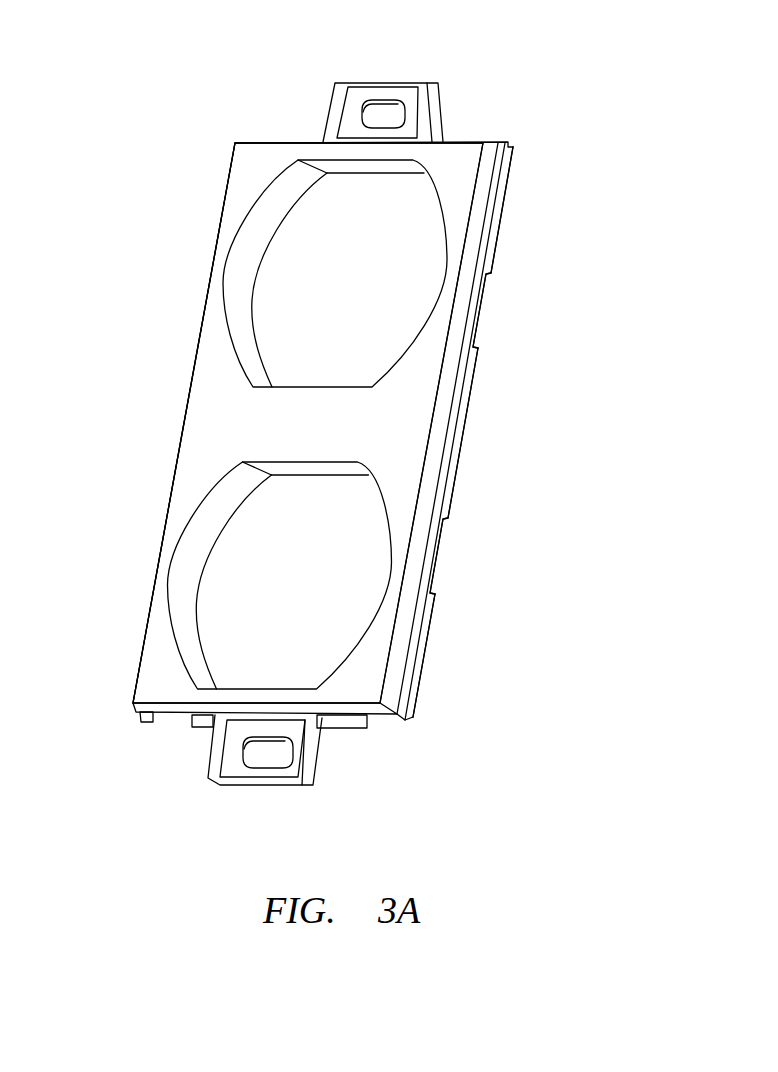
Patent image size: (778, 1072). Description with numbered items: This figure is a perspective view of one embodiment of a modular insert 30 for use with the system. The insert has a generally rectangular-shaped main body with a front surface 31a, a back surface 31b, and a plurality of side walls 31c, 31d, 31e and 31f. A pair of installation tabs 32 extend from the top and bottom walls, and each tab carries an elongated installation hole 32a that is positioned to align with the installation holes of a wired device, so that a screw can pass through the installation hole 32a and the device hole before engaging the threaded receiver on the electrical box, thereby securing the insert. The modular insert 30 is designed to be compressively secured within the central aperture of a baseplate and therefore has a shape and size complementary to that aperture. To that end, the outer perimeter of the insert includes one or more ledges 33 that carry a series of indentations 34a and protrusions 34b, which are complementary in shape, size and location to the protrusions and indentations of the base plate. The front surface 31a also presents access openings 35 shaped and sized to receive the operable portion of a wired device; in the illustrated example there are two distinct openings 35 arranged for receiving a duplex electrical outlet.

The modular insert 30 is at (112, 118).
The front surface 31a is at (340, 434).
The back surface 31b is at (514, 197).
The side wall 31c is at (463, 293).
The side wall 31d is at (188, 379).
The side wall 31e is at (278, 143).
The side wall 31f is at (192, 708).
The installation tab 32 is at (435, 100).
The installation hole 32a is at (387, 110).
The ledge 33 is at (140, 716).
The indentation 34a is at (482, 312).
The protrusion 34b is at (503, 235).
The access opening 35 is at (355, 295).